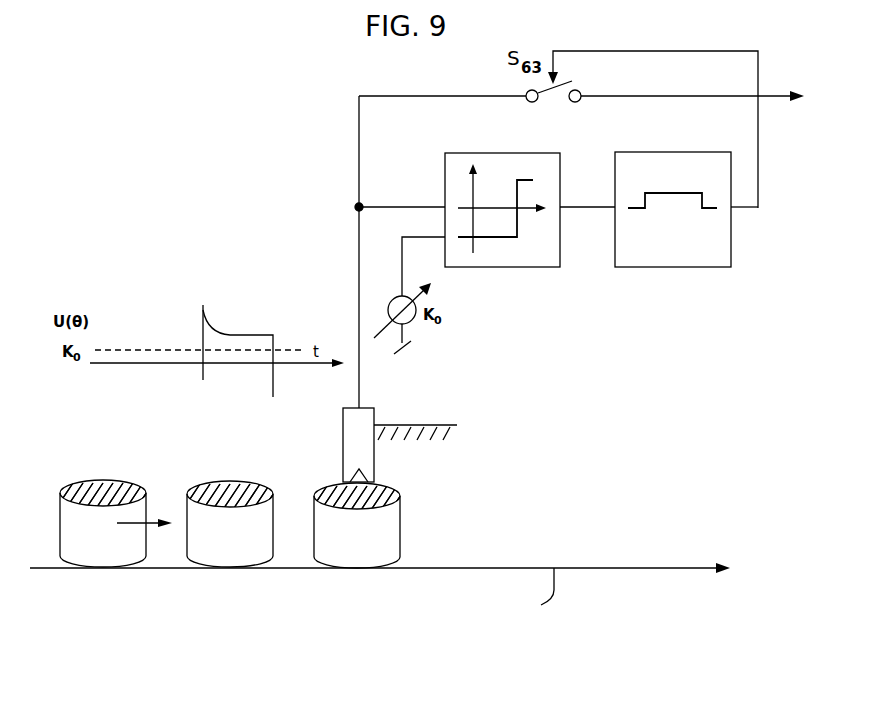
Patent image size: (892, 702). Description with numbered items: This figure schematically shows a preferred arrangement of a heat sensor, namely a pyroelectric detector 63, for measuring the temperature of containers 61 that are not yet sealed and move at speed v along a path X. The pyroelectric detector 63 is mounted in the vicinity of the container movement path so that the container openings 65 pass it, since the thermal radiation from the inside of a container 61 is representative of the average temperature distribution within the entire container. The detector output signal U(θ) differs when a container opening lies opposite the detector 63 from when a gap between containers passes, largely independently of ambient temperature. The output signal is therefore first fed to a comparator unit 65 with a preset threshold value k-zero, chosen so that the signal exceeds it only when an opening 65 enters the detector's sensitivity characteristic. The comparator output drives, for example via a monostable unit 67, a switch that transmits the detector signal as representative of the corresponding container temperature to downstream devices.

The container 61 is at (93, 556).
The pyroelectric detector 63 is at (375, 460).
The container opening / comparator unit 65 is at (445, 190).
The monostable unit 67 is at (731, 222).